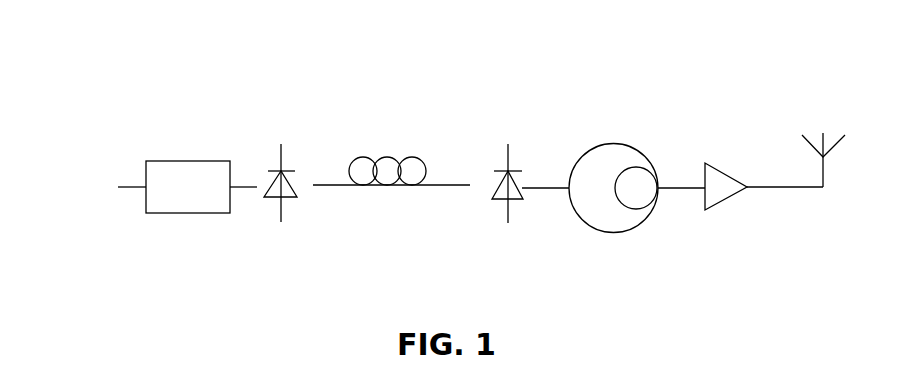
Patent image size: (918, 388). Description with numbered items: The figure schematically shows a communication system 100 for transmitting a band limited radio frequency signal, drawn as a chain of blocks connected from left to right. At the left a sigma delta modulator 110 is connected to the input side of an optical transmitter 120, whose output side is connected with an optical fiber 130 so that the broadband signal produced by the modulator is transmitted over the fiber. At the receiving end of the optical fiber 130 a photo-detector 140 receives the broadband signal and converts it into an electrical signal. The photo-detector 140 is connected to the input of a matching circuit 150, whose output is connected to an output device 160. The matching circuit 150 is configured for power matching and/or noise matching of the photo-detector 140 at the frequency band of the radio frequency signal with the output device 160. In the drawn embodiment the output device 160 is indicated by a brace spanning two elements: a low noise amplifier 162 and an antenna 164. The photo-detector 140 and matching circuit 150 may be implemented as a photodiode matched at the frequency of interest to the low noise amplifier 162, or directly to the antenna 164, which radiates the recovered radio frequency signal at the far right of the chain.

The communication system 100 is at (108, 41).
The sigma delta modulator 110 is at (190, 160).
The optical transmitter 120 is at (280, 166).
The optical fiber 130 is at (386, 157).
The photo-detector 140 is at (507, 155).
The matching circuit 150 is at (617, 145).
The output device 160 is at (805, 70).
The low noise amplifier 162 is at (705, 163).
The antenna 164 is at (822, 152).